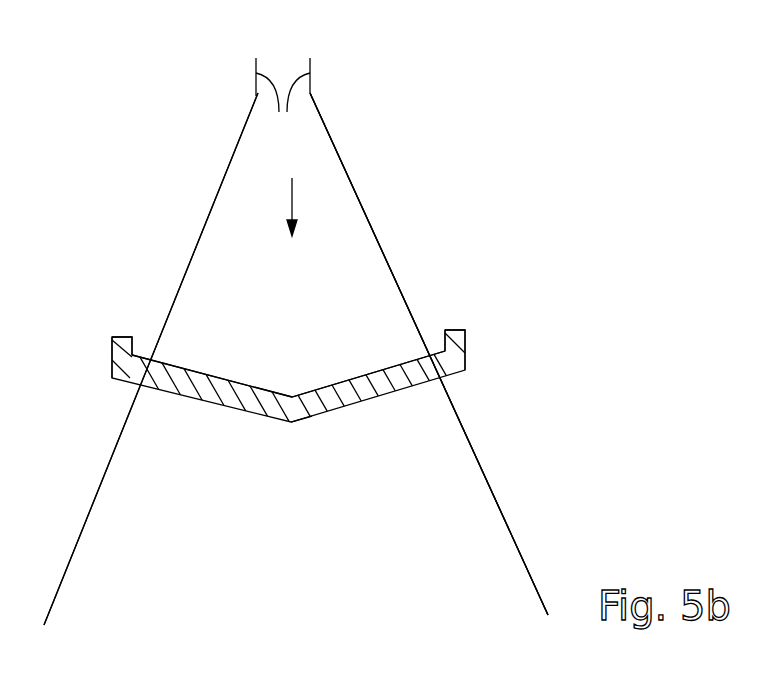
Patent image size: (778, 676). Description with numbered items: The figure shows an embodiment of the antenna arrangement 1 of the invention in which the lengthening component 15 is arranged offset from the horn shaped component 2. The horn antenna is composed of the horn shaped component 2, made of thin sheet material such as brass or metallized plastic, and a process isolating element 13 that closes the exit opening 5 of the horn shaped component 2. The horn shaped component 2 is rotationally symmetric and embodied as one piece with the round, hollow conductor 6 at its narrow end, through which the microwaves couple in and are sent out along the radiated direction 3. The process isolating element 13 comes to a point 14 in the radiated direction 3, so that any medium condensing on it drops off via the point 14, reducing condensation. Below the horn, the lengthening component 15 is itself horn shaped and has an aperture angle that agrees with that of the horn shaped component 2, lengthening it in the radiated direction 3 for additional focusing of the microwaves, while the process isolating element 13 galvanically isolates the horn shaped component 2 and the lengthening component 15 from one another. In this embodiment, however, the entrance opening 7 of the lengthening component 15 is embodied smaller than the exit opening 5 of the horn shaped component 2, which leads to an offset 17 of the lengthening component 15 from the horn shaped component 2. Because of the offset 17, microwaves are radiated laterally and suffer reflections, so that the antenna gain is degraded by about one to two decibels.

The antenna arrangement 1 is at (375, 105).
The horn shaped component 2 is at (352, 175).
The radiated direction 3 is at (293, 200).
The exit opening 5 is at (290, 367).
The round, hollow conductor 6 is at (283, 102).
The entrance opening 7 is at (267, 370).
The process isolating element 13 is at (227, 391).
The point 14 is at (292, 424).
The lengthening component 15 is at (88, 528).
The offset 17 is at (136, 391).